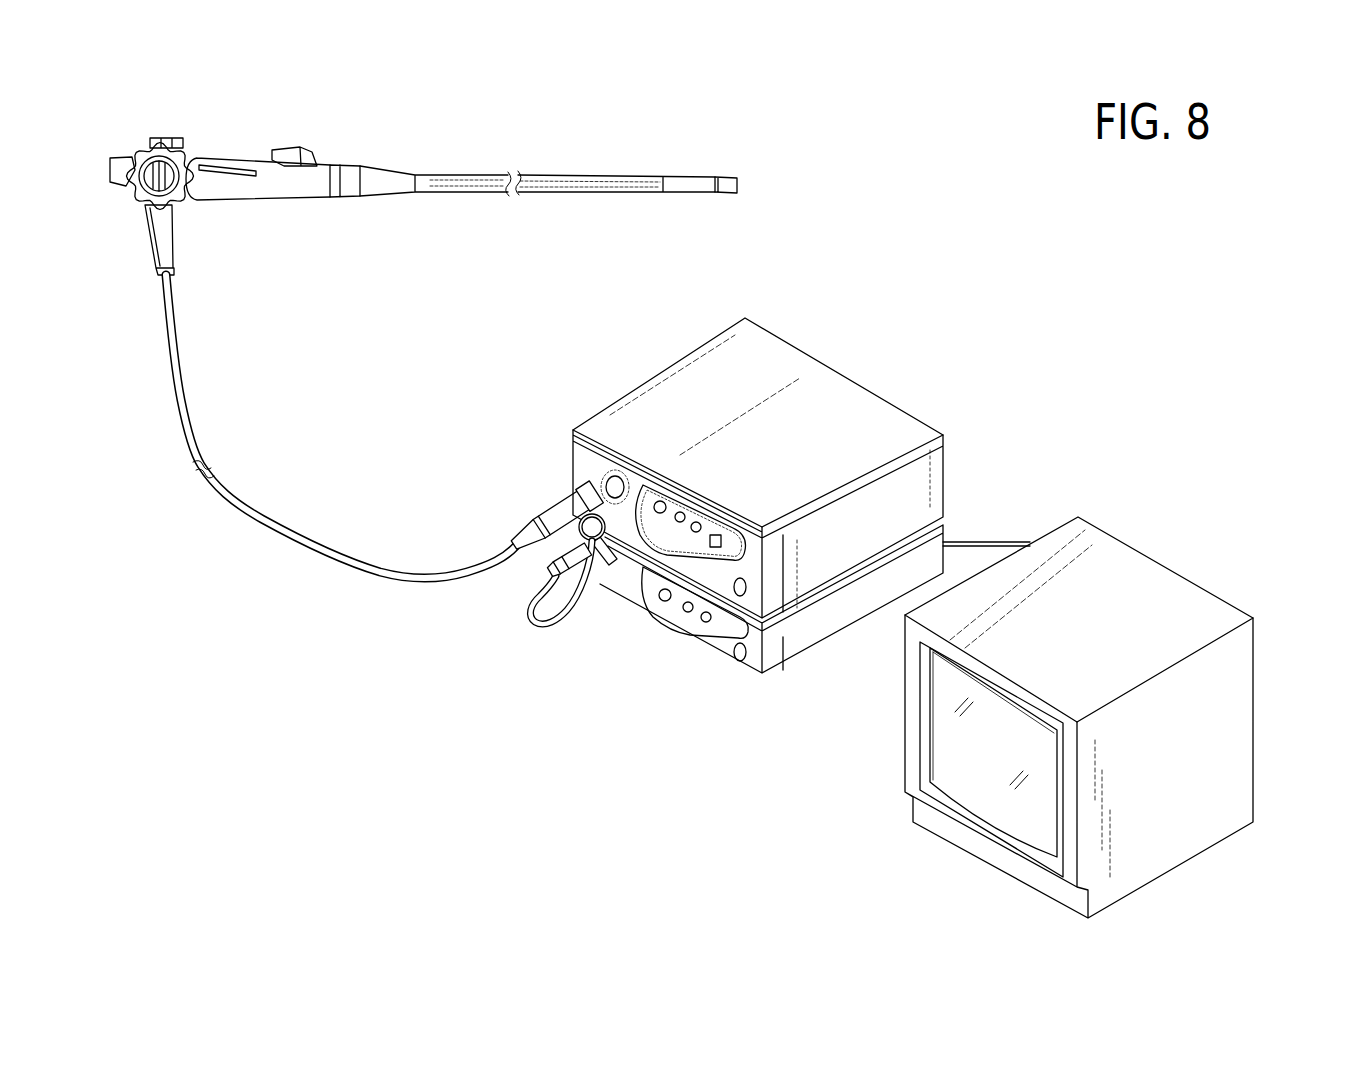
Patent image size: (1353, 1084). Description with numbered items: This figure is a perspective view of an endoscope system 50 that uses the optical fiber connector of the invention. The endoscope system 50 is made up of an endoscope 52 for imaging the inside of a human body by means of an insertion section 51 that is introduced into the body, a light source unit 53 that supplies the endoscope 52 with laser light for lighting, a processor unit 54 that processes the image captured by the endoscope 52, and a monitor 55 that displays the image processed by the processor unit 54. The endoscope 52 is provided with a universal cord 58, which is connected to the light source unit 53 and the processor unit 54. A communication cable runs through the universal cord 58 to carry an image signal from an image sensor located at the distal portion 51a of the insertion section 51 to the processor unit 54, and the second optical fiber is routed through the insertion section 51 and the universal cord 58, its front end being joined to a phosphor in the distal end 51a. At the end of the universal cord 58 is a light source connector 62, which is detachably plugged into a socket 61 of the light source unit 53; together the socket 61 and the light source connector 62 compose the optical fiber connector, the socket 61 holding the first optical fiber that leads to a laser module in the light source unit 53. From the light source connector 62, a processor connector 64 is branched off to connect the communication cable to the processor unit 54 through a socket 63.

The endoscope system 50 is at (735, 511).
The insertion section 51 is at (587, 181).
The distal portion of the insertion section 51a is at (732, 177).
The endoscope 52 is at (270, 203).
The light source unit 53 is at (905, 425).
The processor unit 54 is at (776, 672).
The monitor 55 is at (1160, 587).
The universal cord 58 is at (183, 357).
The socket 61 is at (600, 472).
The light source connector 62 is at (566, 500).
The socket 63 is at (608, 582).
The processor connector 64 is at (545, 576).